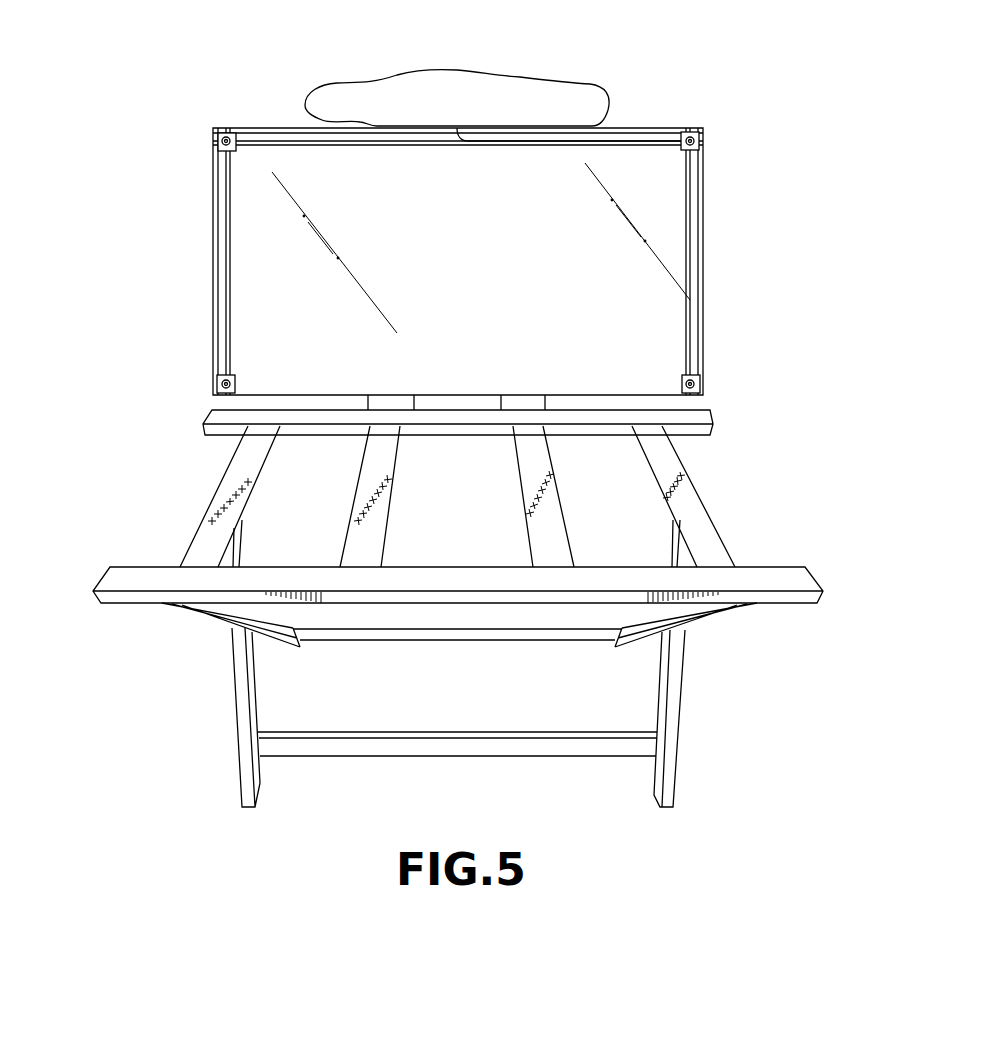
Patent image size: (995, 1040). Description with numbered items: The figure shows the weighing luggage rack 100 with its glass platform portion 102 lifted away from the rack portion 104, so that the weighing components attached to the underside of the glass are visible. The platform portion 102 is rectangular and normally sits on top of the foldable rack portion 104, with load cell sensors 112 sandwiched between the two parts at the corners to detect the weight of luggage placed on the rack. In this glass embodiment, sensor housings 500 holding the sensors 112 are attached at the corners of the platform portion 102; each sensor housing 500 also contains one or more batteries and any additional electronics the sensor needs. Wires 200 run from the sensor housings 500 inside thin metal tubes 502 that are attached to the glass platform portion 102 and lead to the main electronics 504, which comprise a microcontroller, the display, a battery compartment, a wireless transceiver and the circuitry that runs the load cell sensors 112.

The weighing luggage rack 100 is at (184, 235).
The platform portion 102 is at (393, 187).
The rack portion 104 is at (688, 419).
The load cell sensors 112 is at (218, 140).
The connection wiring 200 is at (612, 132).
The sensor housings 500 is at (228, 139).
The metal tubes 502 is at (522, 143).
The main electronics 504 is at (428, 92).